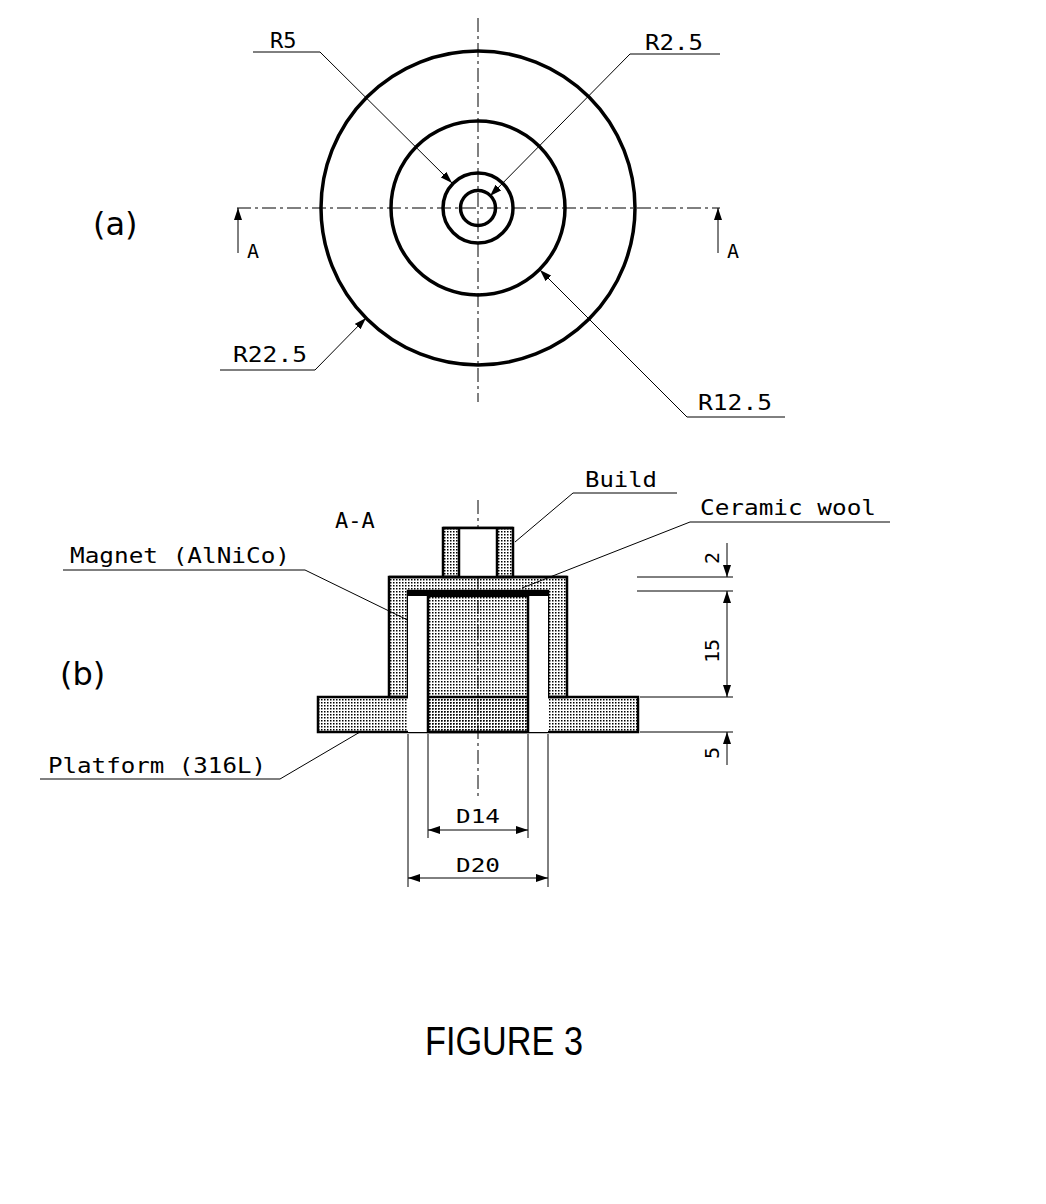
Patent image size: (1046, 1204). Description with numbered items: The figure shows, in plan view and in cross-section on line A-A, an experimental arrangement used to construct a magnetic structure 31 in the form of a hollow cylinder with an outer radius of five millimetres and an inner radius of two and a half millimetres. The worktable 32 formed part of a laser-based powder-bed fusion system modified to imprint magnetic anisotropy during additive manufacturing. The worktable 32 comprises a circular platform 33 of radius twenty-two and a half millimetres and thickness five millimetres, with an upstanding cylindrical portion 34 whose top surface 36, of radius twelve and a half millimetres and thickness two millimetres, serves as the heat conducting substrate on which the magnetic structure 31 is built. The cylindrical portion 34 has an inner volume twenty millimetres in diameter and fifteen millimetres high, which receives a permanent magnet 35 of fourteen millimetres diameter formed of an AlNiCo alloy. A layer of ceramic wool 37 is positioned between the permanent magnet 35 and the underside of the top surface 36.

The magnetic structure 31 is at (488, 231).
The worktable 32 is at (327, 127).
The circular platform 33 is at (355, 252).
The cylindrical portion 34 is at (396, 175).
The permanent magnet 35 is at (500, 677).
The top surface 36 is at (440, 259).
The layer of ceramic wool 37 is at (523, 588).